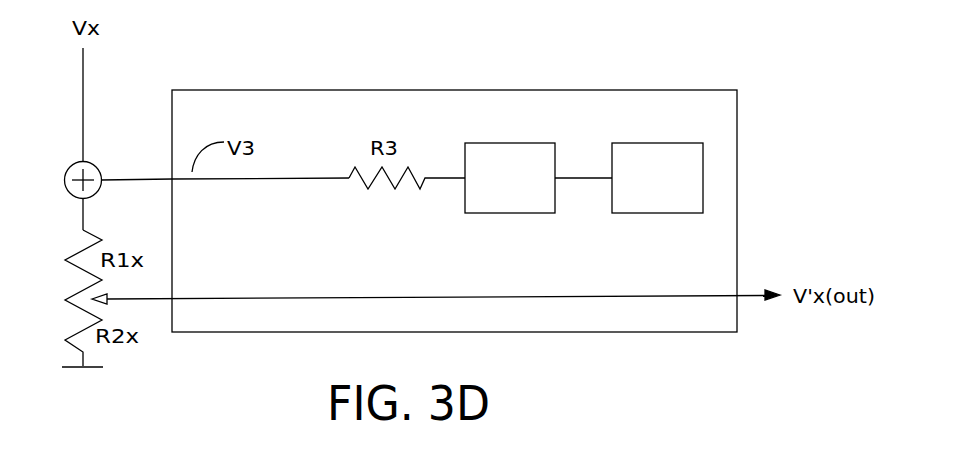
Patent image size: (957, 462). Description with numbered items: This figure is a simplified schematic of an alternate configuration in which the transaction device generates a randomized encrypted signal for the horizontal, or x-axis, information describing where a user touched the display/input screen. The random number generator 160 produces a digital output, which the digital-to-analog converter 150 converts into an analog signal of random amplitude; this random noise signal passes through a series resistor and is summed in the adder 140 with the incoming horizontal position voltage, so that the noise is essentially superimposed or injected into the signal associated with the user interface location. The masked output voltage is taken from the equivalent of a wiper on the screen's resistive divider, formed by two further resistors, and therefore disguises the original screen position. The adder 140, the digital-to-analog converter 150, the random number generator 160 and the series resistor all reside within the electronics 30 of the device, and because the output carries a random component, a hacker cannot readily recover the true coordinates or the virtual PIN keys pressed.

The electronics 30 is at (481, 89).
The adder 140 is at (95, 163).
The digital-to-analog converter 150 is at (489, 141).
The random number generator 160 is at (643, 141).